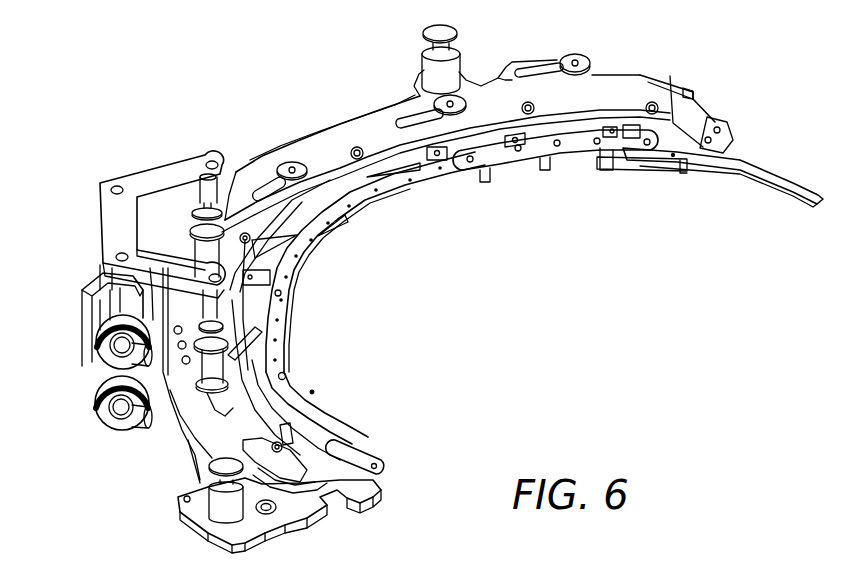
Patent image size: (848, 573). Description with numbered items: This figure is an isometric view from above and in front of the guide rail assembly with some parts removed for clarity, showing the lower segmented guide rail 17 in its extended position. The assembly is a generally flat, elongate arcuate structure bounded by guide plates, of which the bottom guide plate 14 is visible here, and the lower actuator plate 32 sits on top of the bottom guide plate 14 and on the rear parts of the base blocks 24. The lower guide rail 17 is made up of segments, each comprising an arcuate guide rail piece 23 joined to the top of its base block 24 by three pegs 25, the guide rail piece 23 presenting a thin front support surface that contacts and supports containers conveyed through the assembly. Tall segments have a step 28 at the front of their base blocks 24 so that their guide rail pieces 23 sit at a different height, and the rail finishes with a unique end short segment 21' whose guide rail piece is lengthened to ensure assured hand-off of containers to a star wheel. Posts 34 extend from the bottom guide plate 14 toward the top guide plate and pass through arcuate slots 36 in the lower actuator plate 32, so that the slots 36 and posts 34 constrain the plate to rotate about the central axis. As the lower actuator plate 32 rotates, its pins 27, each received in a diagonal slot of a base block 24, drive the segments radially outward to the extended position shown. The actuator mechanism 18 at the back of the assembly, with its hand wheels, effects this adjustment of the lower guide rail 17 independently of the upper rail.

The bottom guide plate 14 is at (678, 82).
The lower segmented guide rail 17 is at (728, 195).
The actuator mechanism 18 is at (66, 411).
The end short segment 21' is at (570, 172).
The guide rail piece 23 is at (293, 378).
The base block 24 is at (303, 453).
The pegs 25 is at (320, 420).
The pins 27 is at (362, 154).
The step 28 is at (340, 442).
The lower actuator plate 32 is at (628, 80).
The posts 34 is at (293, 160).
The arcuate slots 36 is at (264, 190).